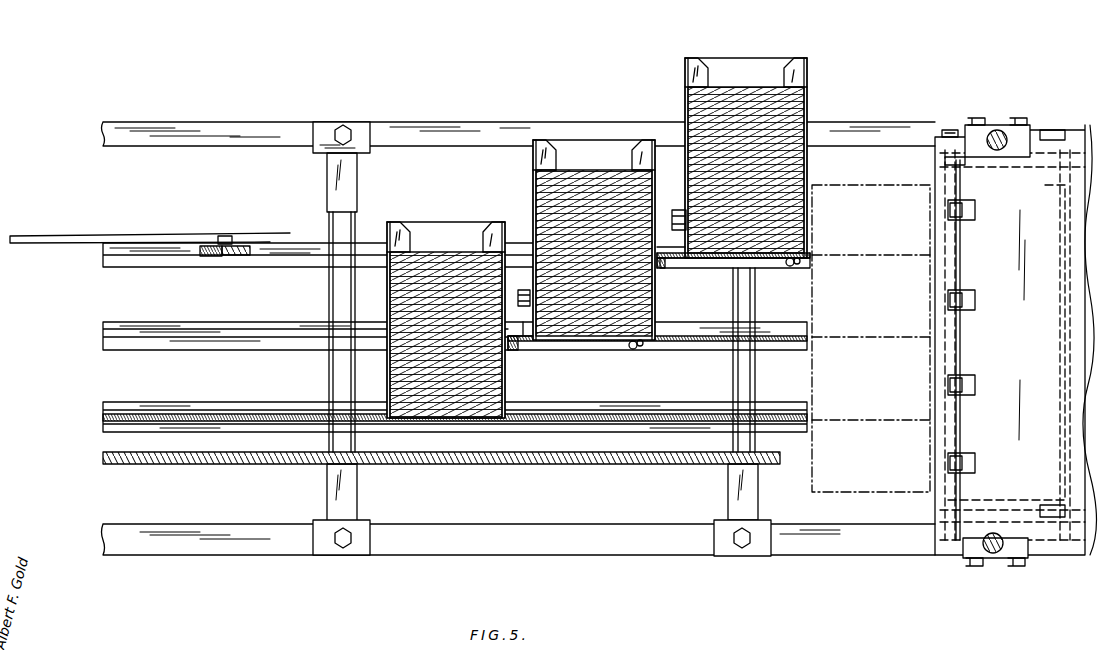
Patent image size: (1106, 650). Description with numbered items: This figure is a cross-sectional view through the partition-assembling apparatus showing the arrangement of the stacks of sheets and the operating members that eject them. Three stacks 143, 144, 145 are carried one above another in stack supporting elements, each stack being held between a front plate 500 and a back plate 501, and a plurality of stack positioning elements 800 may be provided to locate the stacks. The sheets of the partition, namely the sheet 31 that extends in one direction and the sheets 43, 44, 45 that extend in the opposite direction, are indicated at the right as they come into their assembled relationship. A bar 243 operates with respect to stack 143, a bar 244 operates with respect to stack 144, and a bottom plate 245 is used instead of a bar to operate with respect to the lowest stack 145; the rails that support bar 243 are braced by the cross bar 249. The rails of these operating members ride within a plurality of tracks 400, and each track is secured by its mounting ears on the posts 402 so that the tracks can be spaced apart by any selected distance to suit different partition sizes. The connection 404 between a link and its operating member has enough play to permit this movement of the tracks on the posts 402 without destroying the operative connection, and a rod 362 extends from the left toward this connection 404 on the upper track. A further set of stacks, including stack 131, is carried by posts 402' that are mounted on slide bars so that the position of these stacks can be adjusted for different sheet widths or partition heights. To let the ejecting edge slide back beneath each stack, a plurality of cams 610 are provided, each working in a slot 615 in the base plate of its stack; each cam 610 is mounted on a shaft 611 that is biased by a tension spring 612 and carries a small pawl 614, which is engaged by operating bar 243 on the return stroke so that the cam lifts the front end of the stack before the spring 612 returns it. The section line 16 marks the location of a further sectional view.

The section line 16- 16 is at (675, 62).
The sheet 31 is at (856, 188).
The sheet 43 is at (886, 256).
The sheet 44 is at (887, 340).
The sheet 45 is at (850, 420).
The stack 131 is at (1024, 494).
The stack 143 is at (737, 90).
The stack 144 is at (606, 160).
The stack 145 is at (432, 252).
The bar 243 is at (682, 268).
The bar 244 is at (518, 342).
The plate 245 is at (103, 417).
The cross bar 249 is at (246, 256).
The rod 362 is at (95, 236).
The track 400 is at (140, 272).
The post 402 is at (543, 339).
The post 402' is at (996, 339).
The connection 404 is at (222, 236).
The front plate 500 is at (398, 228).
The back plate 501 is at (493, 228).
The cam 610 is at (644, 347).
The shaft 611 is at (631, 348).
The tension spring 612 is at (948, 130).
The pawl 614 is at (945, 162).
The slot 615 is at (966, 210).
The stack positioning element 800 is at (535, 177).